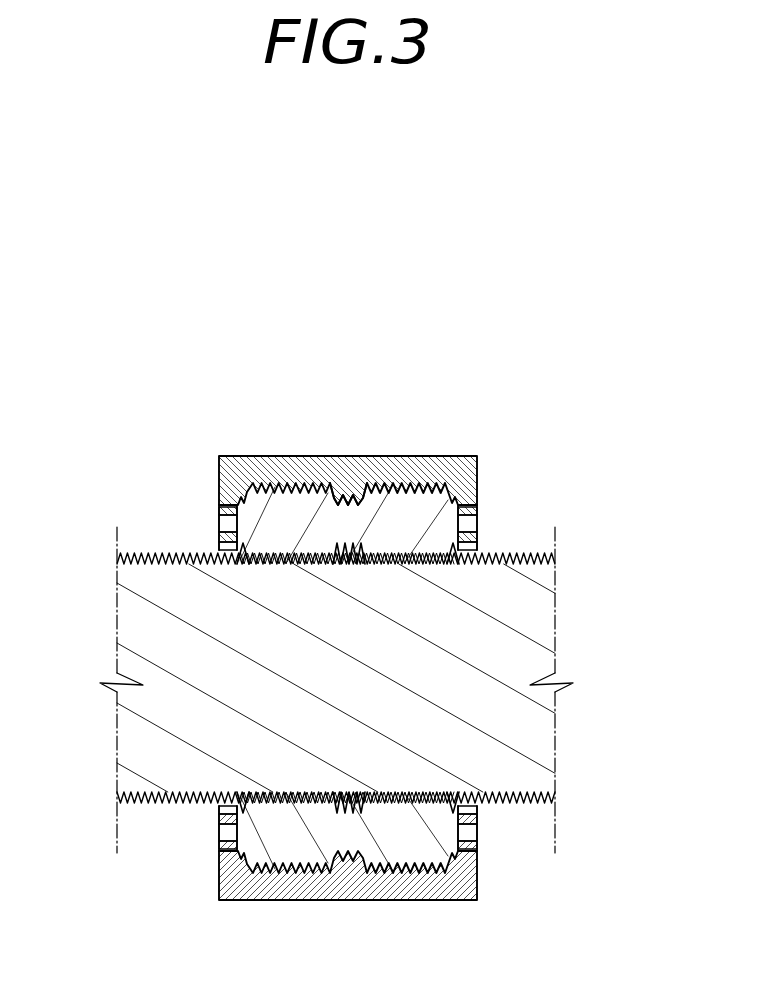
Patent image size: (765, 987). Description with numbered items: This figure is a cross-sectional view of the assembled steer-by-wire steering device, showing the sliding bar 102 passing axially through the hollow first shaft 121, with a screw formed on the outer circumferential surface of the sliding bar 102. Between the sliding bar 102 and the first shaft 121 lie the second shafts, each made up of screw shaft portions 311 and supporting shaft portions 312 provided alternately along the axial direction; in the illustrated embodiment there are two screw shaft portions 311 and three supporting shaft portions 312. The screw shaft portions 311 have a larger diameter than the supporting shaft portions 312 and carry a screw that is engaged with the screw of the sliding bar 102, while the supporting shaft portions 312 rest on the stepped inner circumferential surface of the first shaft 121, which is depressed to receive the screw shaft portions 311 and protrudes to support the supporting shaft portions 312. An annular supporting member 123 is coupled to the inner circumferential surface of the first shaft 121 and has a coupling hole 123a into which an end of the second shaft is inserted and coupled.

The sliding bar 102 is at (153, 643).
The screw shaft portion 311 is at (395, 505).
The supporting shaft portion 312 is at (453, 523).
The first shaft 121 is at (348, 875).
The supporting member 123 is at (218, 847).
The coupling hole 123a is at (231, 827).